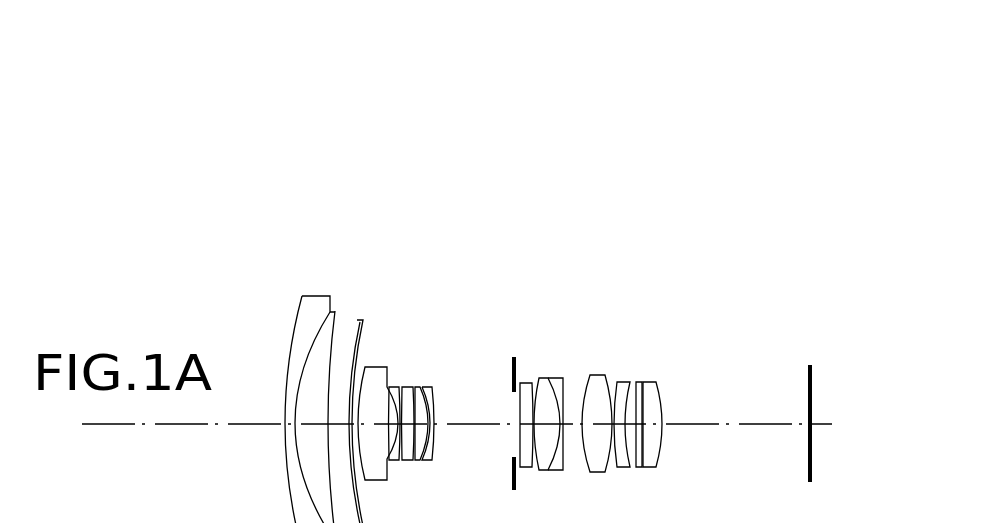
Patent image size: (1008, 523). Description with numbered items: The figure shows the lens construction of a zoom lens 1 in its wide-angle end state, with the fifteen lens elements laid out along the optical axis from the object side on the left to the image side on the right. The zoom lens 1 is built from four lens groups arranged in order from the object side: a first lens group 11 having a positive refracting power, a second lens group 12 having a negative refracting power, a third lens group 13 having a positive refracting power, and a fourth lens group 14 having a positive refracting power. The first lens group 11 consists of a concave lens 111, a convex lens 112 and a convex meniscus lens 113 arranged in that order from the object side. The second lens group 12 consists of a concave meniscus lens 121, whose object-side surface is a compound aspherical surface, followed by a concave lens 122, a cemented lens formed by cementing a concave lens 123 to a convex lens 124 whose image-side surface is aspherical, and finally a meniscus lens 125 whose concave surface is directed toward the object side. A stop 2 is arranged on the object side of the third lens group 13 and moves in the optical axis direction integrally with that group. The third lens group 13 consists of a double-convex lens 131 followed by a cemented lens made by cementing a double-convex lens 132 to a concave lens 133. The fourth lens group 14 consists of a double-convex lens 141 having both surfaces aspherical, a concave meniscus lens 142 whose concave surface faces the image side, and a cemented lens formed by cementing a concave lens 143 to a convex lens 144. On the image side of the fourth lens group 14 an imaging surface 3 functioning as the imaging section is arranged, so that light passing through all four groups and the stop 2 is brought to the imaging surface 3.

The zoom lens 1 is at (150, 98).
The first lens group 11 is at (252, 186).
The concave lens 111 is at (310, 297).
The convex lens 112 is at (335, 311).
The convex meniscus lens 113 is at (363, 317).
The second lens group 12 is at (240, 133).
The concave meniscus lens 121 is at (382, 367).
The concave lens 122 is at (393, 385).
The concave lens 123 is at (408, 385).
The convex lens 124 is at (418, 385).
The concave meniscus lens 125 is at (428, 385).
The third lens group 13 is at (512, 186).
The double-convex lens 131 is at (525, 381).
The double-convex lens 132 is at (543, 380).
The concave lens 133 is at (558, 378).
The fourth lens group 14 is at (678, 133).
The double-convex lens 141 is at (597, 377).
The concave meniscus lens 142 is at (625, 381).
The concave lens 143 is at (640, 381).
The convex lens 144 is at (652, 381).
The stop 2 is at (512, 380).
The imaging surface 3 is at (808, 387).